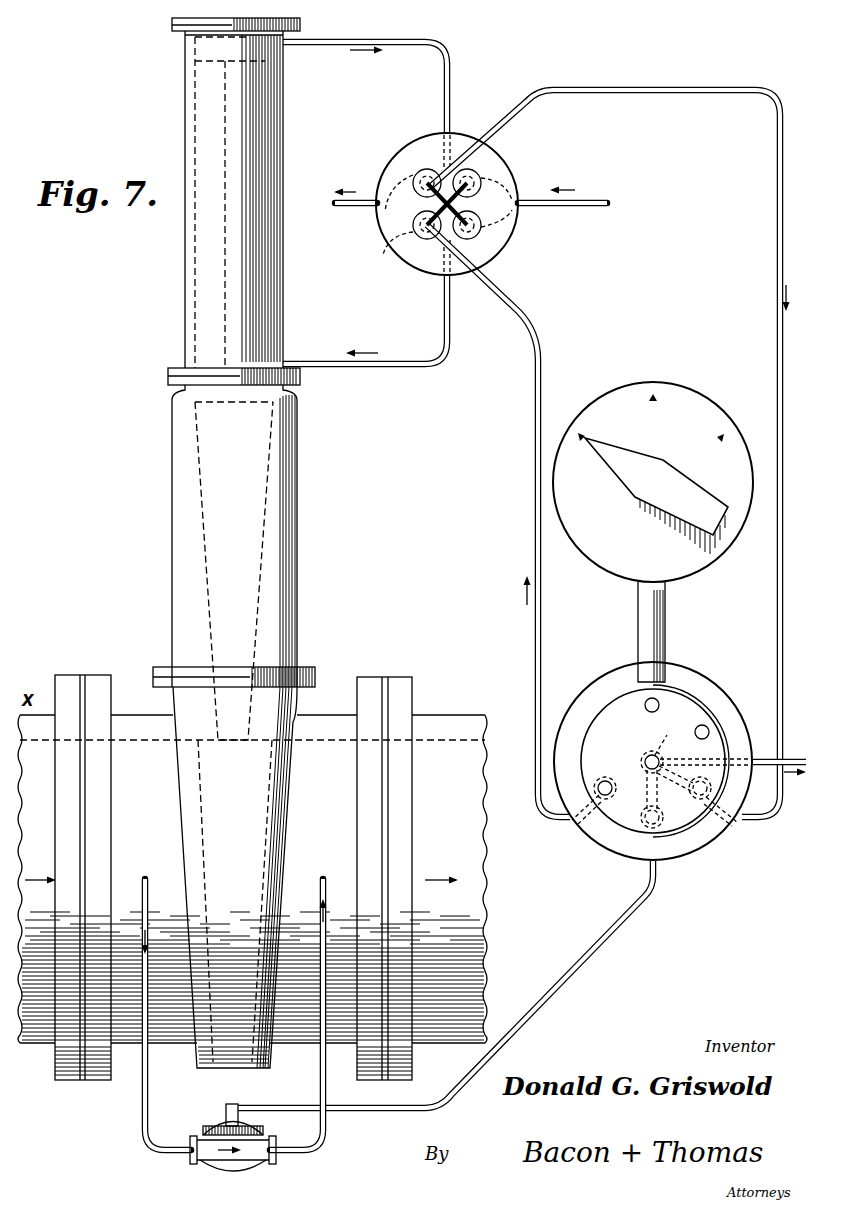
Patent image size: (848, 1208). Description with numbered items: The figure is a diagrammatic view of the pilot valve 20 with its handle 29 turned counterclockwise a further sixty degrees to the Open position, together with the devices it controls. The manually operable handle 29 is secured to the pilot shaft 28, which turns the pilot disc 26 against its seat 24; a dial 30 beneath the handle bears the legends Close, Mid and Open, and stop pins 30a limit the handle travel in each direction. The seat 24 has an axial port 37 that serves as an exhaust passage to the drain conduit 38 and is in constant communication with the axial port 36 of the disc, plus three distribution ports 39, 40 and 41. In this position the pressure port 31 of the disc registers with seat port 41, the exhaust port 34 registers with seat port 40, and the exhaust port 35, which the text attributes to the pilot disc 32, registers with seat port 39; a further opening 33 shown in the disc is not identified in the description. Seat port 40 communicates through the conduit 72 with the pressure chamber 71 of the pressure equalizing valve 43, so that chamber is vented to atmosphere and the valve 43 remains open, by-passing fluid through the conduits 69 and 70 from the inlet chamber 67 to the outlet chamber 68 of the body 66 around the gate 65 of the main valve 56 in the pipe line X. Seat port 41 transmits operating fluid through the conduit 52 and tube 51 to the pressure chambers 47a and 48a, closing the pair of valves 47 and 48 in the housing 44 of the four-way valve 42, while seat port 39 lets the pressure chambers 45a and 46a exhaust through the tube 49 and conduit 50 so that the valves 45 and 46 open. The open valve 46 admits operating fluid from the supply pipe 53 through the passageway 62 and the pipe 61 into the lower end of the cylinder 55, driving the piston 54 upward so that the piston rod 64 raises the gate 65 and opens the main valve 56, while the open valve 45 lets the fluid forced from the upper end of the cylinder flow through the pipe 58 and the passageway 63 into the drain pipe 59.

The pilot valve 20 is at (653, 747).
The pilot disc seat 24 is at (712, 677).
The pilot disc 26 is at (614, 700).
The pilot shaft 28 is at (665, 602).
The handle 29 is at (660, 505).
The dial 30 is at (653, 477).
The stop pins 30a is at (724, 471).
The pressure port 31 is at (605, 780).
The pilot disc 32 is at (660, 706).
The port 33 is at (709, 730).
The exhaust port 34 is at (644, 796).
The exhaust port 35 is at (690, 795).
The axial port 36 is at (645, 762).
The axial port 37 is at (669, 736).
The drain conduit 38 is at (786, 758).
The seat port 39 is at (698, 808).
The seat port 40 is at (648, 830).
The seat port 41 is at (586, 810).
The four-way valve 42 is at (450, 224).
The pressure equalizing valve 43 is at (228, 1148).
The housing 44 is at (470, 272).
The valve 45 is at (428, 168).
The pressure chamber 45a is at (418, 172).
The valve 46 is at (490, 255).
The pressure chamber 46a is at (483, 226).
The valve 47 is at (484, 182).
The pressure chamber 47a is at (481, 176).
The valve 48 is at (421, 240).
The pressure chamber 48a is at (415, 238).
The tube 49 is at (420, 178).
The conduit 50 is at (777, 269).
The tube 51 is at (466, 176).
The conduit 52 is at (537, 660).
The operating fluid supply pipe 53 is at (590, 200).
The piston 54 is at (283, 61).
The cylinder 55 is at (230, 196).
The main valve 56 is at (297, 548).
The pipe 58 is at (448, 70).
The drain pipe 59 is at (337, 207).
The pipe 61 is at (422, 363).
The passageway 62 is at (444, 277).
The passageway 63 is at (386, 210).
The piston rod 64 is at (243, 308).
The gate 65 is at (272, 455).
The body 66 is at (316, 712).
The inlet chamber 67 is at (138, 740).
The outlet chamber 68 is at (330, 748).
The conduit 69 is at (143, 1113).
The conduit 70 is at (326, 1138).
The pressure chamber 71 is at (226, 1118).
The conduit 72 is at (575, 998).